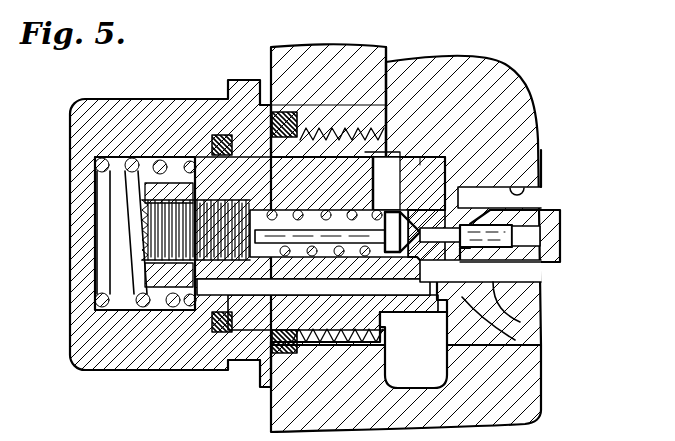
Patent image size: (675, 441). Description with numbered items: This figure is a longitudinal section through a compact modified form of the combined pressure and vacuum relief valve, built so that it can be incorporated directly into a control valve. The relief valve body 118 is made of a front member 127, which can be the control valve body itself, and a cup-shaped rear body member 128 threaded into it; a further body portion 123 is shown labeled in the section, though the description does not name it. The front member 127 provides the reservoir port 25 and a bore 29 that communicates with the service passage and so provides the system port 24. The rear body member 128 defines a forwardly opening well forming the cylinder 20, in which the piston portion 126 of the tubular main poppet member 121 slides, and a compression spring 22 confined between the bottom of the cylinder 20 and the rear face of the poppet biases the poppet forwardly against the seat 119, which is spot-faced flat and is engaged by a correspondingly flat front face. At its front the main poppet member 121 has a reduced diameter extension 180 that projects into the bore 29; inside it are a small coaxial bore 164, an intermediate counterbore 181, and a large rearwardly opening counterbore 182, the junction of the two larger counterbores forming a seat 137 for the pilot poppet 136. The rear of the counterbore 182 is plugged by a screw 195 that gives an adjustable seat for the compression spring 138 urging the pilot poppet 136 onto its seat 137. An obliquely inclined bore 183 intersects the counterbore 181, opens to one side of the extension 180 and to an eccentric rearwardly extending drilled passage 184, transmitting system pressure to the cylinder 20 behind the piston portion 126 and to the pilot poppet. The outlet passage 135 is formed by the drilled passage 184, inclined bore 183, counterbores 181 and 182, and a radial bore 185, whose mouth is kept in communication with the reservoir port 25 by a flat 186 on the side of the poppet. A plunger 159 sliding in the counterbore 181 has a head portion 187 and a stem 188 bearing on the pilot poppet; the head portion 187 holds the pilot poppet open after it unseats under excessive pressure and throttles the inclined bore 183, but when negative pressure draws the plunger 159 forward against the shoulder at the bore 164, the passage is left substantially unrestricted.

The cylinder 20 is at (115, 163).
The compression spring 22 is at (135, 236).
The system port 24 is at (535, 278).
The reservoir port 25 is at (390, 62).
The bore 29 is at (505, 190).
The relief valve body 118 is at (350, 37).
The seat 119 is at (500, 350).
The main poppet member 121 is at (413, 350).
The body wall 123 is at (452, 178).
The piston portion 126 is at (226, 371).
The front member 127 is at (518, 80).
The rear body member 128 is at (193, 99).
The outlet passage 135 is at (381, 178).
The pilot poppet 136 is at (340, 257).
The seat 137 is at (385, 257).
The compression spring 138 is at (390, 183).
The plunger 159 is at (503, 322).
The small diameter coaxial bore 164 is at (562, 236).
The extension 180 is at (530, 263).
The counterbore 181 is at (560, 216).
The counterbore 182 is at (258, 257).
The inclined bore 183 is at (492, 206).
The drilled passage 184 is at (256, 287).
The radial bore 185 is at (398, 185).
The flat 186 is at (428, 160).
The head portion 187 is at (497, 302).
The stem 188 is at (432, 298).
The screw 195 is at (155, 245).